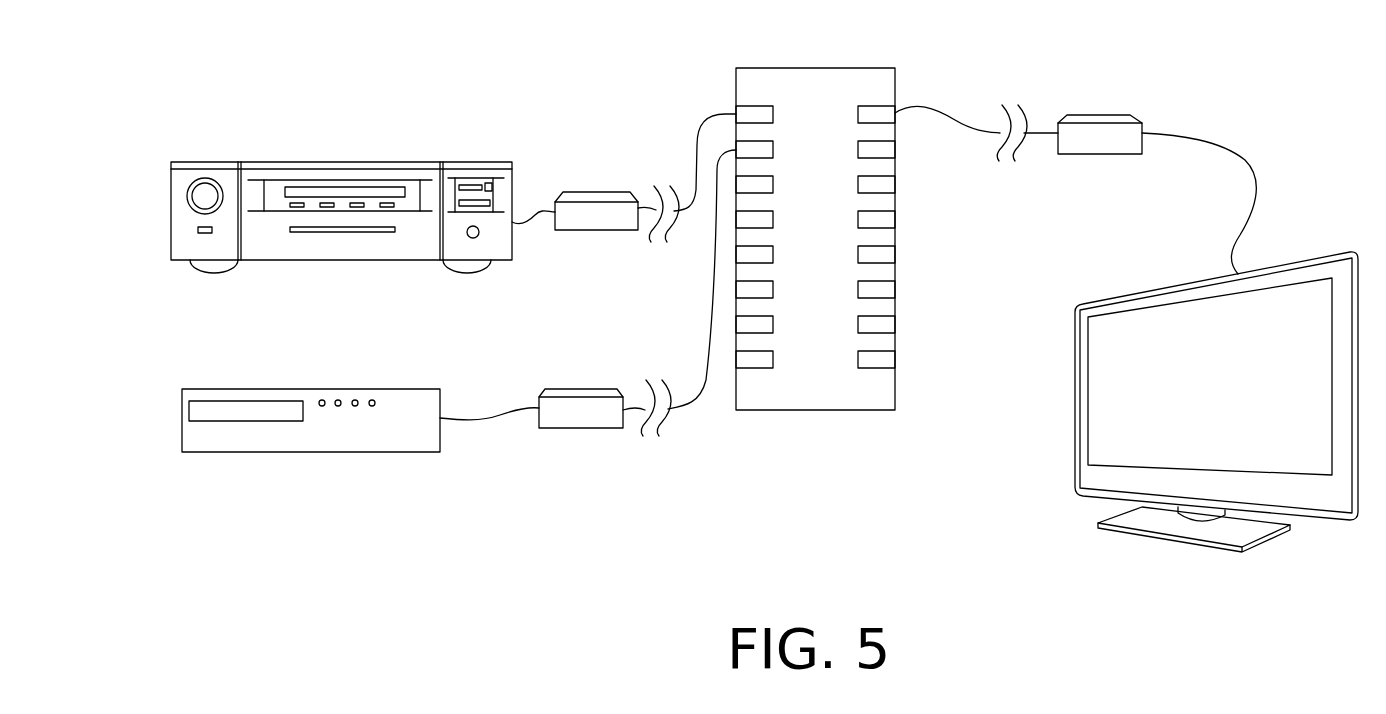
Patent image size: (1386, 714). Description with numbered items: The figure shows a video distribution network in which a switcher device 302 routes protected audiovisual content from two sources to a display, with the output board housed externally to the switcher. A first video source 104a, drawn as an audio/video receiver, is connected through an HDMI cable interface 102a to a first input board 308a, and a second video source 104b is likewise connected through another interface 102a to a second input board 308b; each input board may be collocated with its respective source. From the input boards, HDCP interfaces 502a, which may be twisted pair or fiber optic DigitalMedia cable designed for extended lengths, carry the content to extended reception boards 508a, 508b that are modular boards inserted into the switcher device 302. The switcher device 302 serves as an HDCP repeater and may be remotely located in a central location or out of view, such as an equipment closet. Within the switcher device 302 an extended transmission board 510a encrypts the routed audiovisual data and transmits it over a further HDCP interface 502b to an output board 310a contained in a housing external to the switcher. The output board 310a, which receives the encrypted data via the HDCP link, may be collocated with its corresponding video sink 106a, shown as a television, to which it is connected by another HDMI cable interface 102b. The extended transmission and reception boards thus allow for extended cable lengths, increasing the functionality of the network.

The first video source 104a is at (446, 162).
The second video source 104b is at (401, 370).
The interface 102a is at (530, 219).
The interface 102b is at (1192, 142).
The first input board 308a is at (600, 200).
The second input board 308b is at (568, 396).
The HDCP interface 502a is at (697, 134).
The HDCP interface 502b is at (972, 87).
The switcher device 302 is at (830, 70).
The extended reception board 508a is at (786, 106).
The extended reception board 508b is at (770, 154).
The extended transmission board 510a is at (858, 111).
The output board 310a is at (1097, 154).
The video sink 106a is at (1108, 300).